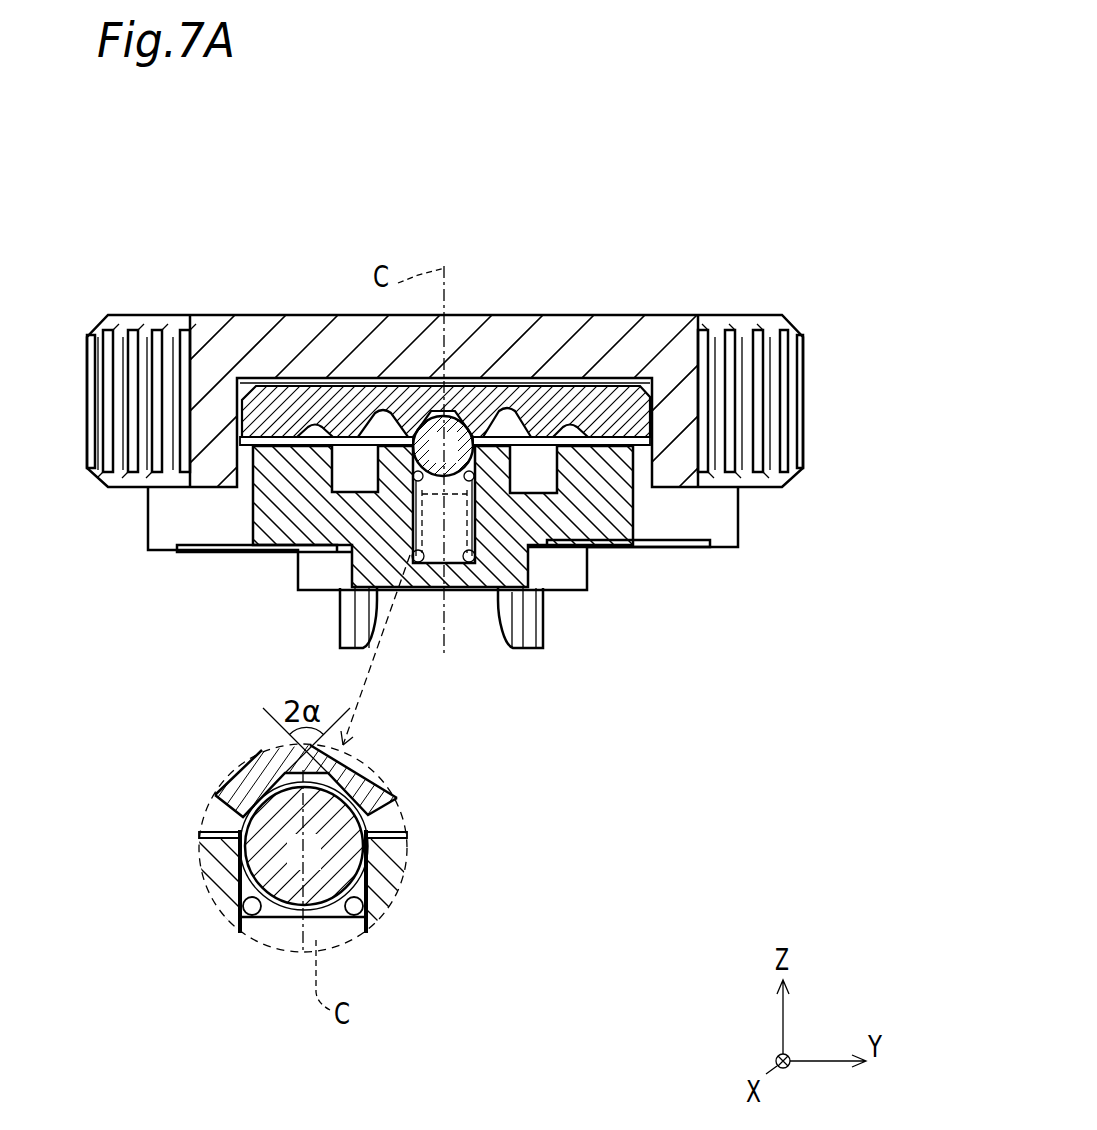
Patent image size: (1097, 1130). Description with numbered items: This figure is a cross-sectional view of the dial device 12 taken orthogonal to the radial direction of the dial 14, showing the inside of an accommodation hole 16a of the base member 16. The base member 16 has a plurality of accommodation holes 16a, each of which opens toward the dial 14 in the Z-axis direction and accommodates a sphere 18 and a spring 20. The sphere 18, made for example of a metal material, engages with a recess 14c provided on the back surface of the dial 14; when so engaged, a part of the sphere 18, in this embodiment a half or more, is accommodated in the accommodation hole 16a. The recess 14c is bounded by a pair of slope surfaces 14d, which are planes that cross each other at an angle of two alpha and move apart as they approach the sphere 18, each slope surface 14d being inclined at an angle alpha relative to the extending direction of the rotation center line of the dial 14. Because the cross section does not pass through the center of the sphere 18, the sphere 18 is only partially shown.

The dial device 12 is at (109, 240).
The dial 14 is at (537, 365).
The recess 14c is at (408, 402).
The slope surface 14d is at (237, 790).
The base member 16 is at (673, 527).
The accommodation hole 16a is at (480, 516).
The sphere 18 is at (458, 462).
The spring 20 is at (446, 566).